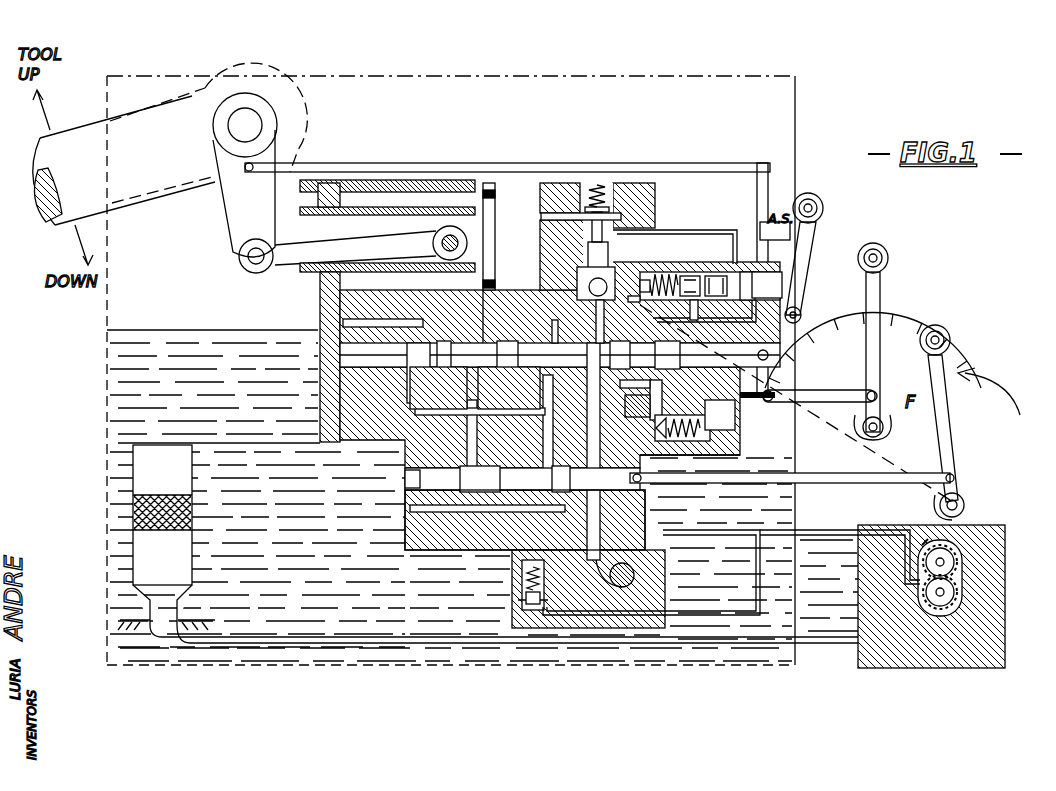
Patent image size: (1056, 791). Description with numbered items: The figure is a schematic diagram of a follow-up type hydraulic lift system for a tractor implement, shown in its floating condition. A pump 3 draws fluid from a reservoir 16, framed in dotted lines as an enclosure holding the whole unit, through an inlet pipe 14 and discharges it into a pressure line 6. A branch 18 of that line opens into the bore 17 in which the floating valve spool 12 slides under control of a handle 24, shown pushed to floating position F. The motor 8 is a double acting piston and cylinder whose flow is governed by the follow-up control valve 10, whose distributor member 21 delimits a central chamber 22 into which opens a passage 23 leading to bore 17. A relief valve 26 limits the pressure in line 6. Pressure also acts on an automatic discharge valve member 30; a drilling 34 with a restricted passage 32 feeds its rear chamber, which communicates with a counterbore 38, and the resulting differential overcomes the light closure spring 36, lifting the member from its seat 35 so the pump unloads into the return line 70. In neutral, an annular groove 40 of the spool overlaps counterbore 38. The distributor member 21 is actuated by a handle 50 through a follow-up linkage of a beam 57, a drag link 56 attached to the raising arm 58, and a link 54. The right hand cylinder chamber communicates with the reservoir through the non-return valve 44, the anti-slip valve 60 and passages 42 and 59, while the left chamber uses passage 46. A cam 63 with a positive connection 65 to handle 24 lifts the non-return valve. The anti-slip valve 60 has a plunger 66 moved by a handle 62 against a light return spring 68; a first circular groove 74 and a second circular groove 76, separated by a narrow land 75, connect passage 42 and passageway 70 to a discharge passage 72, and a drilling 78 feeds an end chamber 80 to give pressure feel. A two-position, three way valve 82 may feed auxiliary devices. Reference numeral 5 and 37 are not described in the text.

The pump 3 is at (950, 565).
The lever direction arrow 5 is at (996, 395).
The pressure line 6 is at (820, 538).
The motor 8 is at (415, 203).
The follow-up control valve 10 is at (457, 343).
The floating valve spool 12 is at (679, 479).
The inlet pipe 14 is at (812, 640).
The reservoir 16 is at (218, 537).
The bore 17 is at (406, 480).
The branch 18 is at (470, 540).
The distributor member 21 is at (408, 350).
The central chamber 22 is at (470, 342).
The passage 23 is at (480, 396).
The handle 24 is at (945, 441).
The relief valve 26 is at (510, 603).
The automatic discharge valve member 30 is at (735, 446).
The restricted passage 32 is at (641, 403).
The drilling 34 is at (715, 395).
The seat 35 is at (623, 440).
The light closure spring 36 is at (735, 425).
The spring 37 is at (682, 436).
The counterbore 38 is at (608, 321).
The annular groove 40 is at (665, 385).
The passage 42 is at (556, 330).
The non-return valve 44 is at (590, 245).
The passage 46 is at (348, 326).
The handle 50 is at (878, 292).
The link 54 is at (820, 400).
The drag link 56 is at (625, 170).
The beam 57 is at (757, 193).
The raising arm 58 is at (248, 219).
The line 59 is at (410, 510).
The anti-slip valve 60 is at (793, 268).
The handle 62 is at (802, 243).
The cam 63 is at (585, 275).
The positive connection 65 is at (822, 440).
The plunger 66 is at (790, 283).
The light return spring 68 is at (655, 272).
The return line 70 is at (700, 310).
The discharge passage 72 is at (679, 312).
The first circular groove 74 is at (765, 265).
The narrow land 75 is at (717, 275).
The second circular groove 76 is at (688, 275).
The drilling 78 is at (638, 300).
The end chamber 80 is at (636, 281).
The two-position, three way valve 82 is at (645, 575).